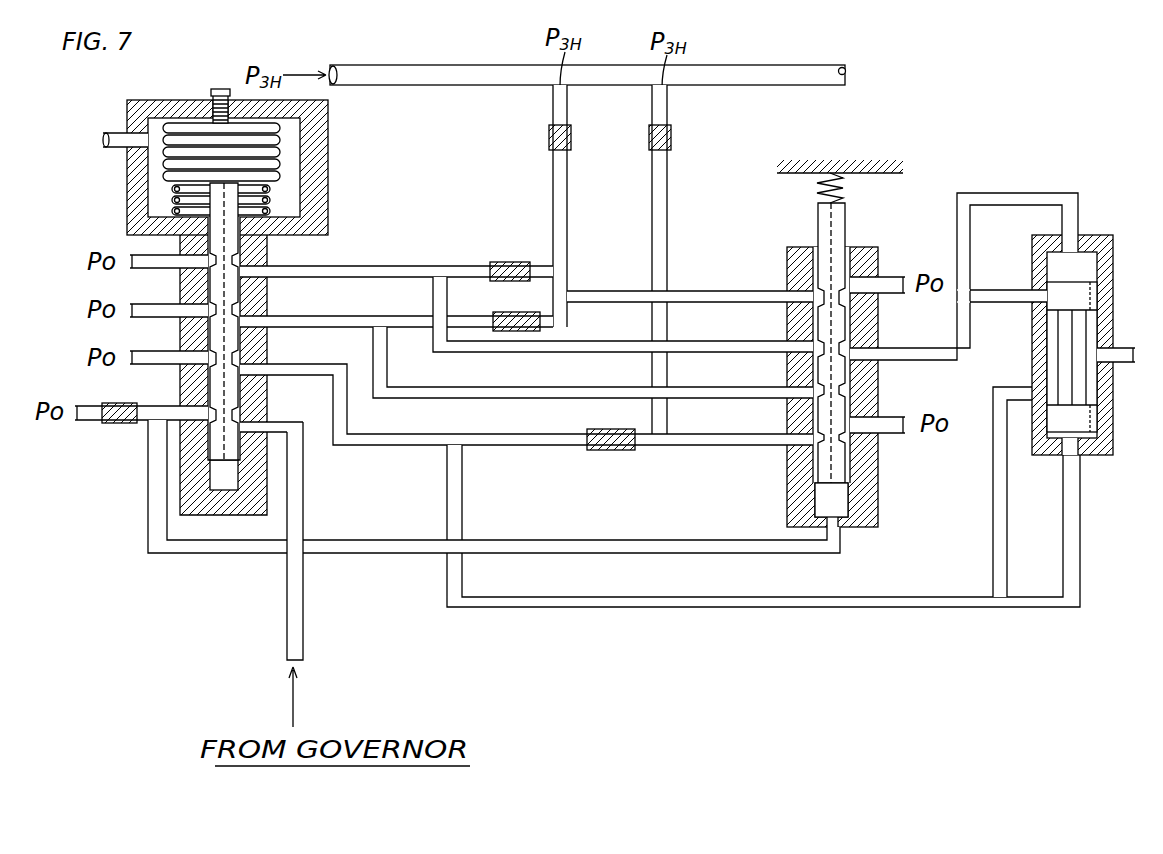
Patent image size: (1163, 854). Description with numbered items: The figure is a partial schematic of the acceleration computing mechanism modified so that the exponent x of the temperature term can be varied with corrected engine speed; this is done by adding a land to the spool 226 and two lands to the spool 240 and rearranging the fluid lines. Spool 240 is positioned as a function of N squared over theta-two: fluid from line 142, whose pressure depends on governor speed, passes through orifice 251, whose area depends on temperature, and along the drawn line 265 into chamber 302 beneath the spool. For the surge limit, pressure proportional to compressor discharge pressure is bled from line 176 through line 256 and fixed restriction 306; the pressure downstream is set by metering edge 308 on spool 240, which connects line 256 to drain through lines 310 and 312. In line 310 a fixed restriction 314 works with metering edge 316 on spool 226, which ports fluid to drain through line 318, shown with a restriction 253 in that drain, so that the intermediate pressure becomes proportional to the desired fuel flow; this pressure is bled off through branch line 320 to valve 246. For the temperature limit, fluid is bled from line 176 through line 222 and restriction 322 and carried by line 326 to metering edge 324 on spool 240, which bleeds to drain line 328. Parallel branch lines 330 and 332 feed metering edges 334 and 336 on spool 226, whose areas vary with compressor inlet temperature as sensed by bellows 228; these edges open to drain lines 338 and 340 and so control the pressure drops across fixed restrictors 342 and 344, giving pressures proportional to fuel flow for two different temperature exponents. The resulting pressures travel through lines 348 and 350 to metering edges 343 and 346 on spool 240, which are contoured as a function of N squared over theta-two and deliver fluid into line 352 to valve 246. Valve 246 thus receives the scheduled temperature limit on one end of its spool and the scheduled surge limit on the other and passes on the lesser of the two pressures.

The line 176 is at (412, 54).
The line 222 is at (567, 106).
The line 256 is at (667, 110).
The restriction 322 is at (571, 140).
The fixed restriction 306 is at (671, 140).
The bellows 228 is at (280, 153).
The drain line 338 is at (148, 256).
The drain line 340 is at (130, 306).
The line 318 is at (130, 352).
The restriction 253 is at (120, 423).
The spool 226 is at (238, 243).
The branch line 330 is at (418, 266).
The metering edge 334 is at (252, 270).
The metering edge 336 is at (252, 320).
The branch line 332 is at (362, 317).
The fixed restrictor 342 is at (515, 281).
The fixed restrictor 344 is at (515, 331).
The line 348 is at (470, 352).
The line 350 is at (420, 398).
The line 326 is at (685, 304).
The metering edge 316 is at (252, 368).
The line 310 is at (738, 434).
The fixed restriction 314 is at (608, 450).
The branch line 320 is at (658, 607).
The conduit 265 is at (642, 540).
The orifice 251 is at (255, 426).
The line 142 is at (303, 613).
The spool 240 is at (845, 220).
The drain line 328 is at (888, 280).
The metering edge 324 is at (850, 297).
The metering edge 343 is at (852, 350).
The metering edge 346 is at (852, 392).
The line 312 is at (892, 424).
The metering edge 308 is at (852, 440).
The chamber 302 is at (843, 500).
The valve 246 is at (1032, 380).
The line 352 is at (970, 338).